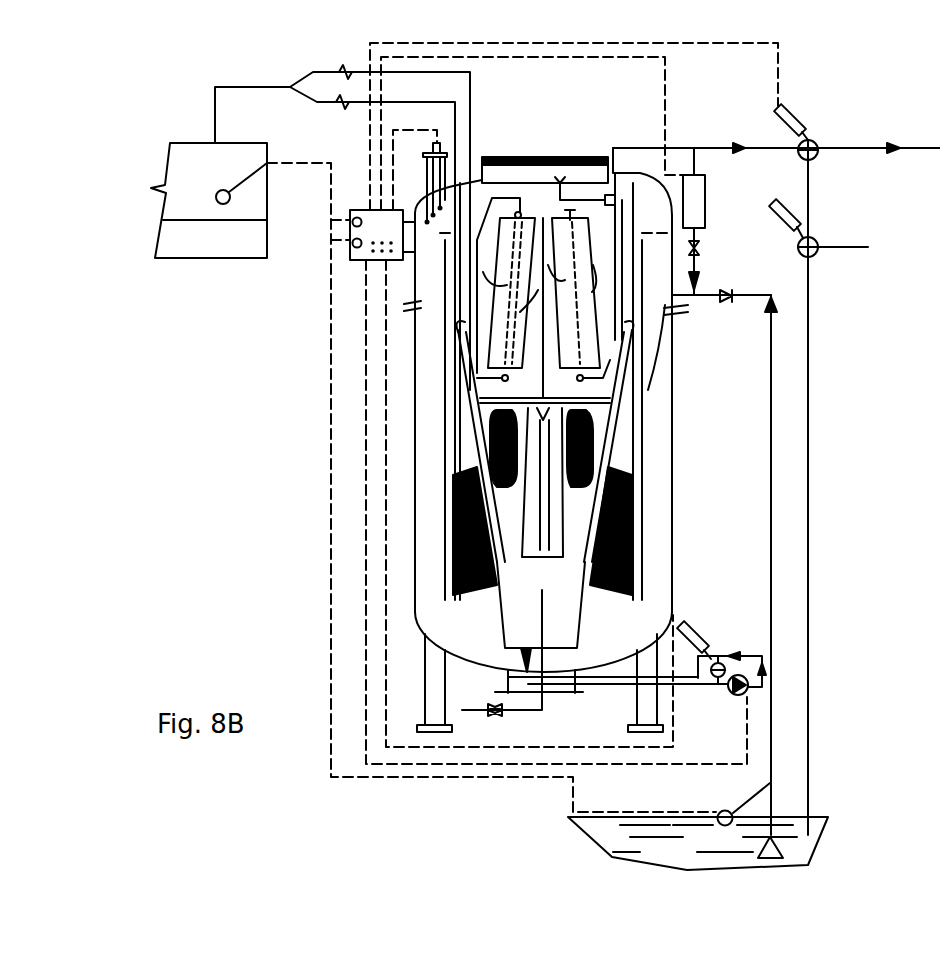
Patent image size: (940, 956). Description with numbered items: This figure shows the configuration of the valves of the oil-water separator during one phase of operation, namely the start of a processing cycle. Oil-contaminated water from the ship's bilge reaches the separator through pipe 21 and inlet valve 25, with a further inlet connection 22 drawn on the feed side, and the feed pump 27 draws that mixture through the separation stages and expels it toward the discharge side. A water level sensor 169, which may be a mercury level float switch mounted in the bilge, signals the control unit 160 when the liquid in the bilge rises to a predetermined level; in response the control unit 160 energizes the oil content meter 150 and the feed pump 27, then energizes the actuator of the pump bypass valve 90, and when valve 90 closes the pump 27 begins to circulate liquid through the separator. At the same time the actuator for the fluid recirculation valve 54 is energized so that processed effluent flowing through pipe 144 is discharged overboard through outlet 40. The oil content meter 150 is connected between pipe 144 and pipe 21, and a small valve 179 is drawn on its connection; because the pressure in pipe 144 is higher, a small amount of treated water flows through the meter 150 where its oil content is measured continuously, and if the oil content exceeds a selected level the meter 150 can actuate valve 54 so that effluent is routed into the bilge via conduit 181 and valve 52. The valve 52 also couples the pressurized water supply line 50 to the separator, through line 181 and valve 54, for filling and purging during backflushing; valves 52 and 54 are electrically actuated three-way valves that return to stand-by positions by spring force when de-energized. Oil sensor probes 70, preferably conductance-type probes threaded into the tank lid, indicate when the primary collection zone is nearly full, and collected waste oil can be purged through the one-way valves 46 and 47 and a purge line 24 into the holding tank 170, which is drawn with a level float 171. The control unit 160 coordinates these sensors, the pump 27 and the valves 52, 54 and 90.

The feed pipe 24 is at (267, 87).
The one-way valve 47 is at (342, 100).
The one-way valve 46 is at (347, 72).
The pipe 144 is at (677, 147).
The fluid recirculation valve 54 is at (800, 138).
The outlet 40 is at (832, 147).
The float switch 171 is at (230, 197).
The oil sensor probe 70 is at (425, 200).
The holding tank 170 is at (170, 263).
The control unit 160 is at (350, 258).
The oil content meter 150 is at (707, 190).
The conduit 181 is at (812, 207).
The pressurized water supply line 50 is at (840, 247).
The valve 52 is at (812, 257).
The valve 179 is at (700, 248).
The inlet line 22 is at (700, 280).
The inlet valve 25 is at (729, 298).
The pipe 21 is at (769, 497).
The pump bypass valve 90 is at (716, 678).
The feed pump 27 is at (736, 697).
The water level sensor 169 is at (722, 826).